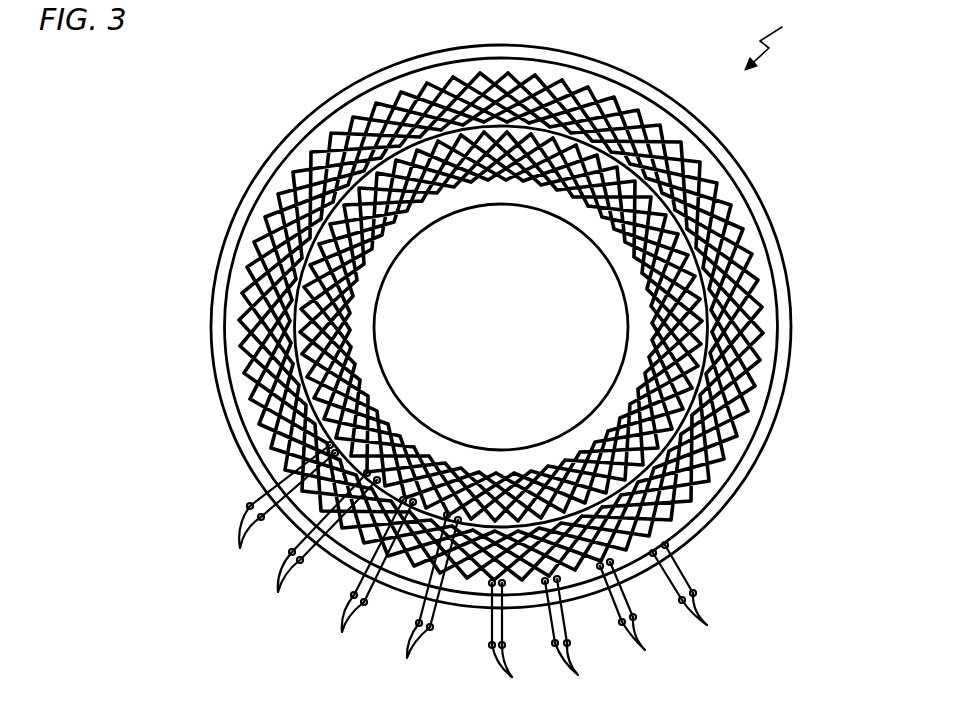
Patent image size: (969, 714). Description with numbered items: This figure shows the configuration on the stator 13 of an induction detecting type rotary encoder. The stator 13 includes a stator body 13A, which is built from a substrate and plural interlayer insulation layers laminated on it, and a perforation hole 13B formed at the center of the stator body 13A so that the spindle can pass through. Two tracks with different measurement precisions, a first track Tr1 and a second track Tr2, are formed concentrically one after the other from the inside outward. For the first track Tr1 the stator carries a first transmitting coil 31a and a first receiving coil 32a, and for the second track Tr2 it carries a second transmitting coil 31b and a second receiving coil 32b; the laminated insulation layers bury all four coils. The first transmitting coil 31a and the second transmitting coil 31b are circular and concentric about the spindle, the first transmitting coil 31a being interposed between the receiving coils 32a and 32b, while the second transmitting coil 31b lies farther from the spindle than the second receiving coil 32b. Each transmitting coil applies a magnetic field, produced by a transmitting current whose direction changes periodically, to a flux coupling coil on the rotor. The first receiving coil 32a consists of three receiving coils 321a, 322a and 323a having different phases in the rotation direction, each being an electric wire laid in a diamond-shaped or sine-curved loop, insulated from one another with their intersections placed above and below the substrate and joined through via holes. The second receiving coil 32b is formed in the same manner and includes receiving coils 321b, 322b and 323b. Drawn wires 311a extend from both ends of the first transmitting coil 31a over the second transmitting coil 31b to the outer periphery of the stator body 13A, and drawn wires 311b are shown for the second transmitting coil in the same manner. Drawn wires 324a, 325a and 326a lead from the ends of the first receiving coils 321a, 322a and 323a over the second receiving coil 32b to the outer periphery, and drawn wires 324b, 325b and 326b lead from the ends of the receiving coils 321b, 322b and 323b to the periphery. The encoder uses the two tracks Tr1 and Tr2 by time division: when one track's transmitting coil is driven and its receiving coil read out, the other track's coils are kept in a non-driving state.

The stator 13 is at (787, 24).
The stator body 13A is at (277, 153).
The perforation hole 13B is at (501, 205).
The first transmitting coil 31a is at (543, 126).
The second transmitting coil 31b is at (614, 84).
The first receiving coil 32a is at (382, 326).
The second receiving coil 32b is at (547, 326).
The receiving coil 321a is at (414, 326).
The receiving coil 322a is at (414, 326).
The receiving coil 323a is at (297, 300).
The receiving coil 321b is at (527, 326).
The receiving coil 322b is at (527, 326).
The receiving coil 323b is at (733, 428).
The drawn wires 311a is at (272, 510).
The neutral point lead of second coil 311b is at (695, 597).
The drawn wires 324a is at (422, 601).
The drawn wires 325a is at (366, 579).
The drawn wires 326a is at (316, 545).
The drawn wires 324b is at (638, 617).
The drawn wires 325b is at (578, 640).
The drawn wires 326b is at (511, 645).
The first track Tr1 is at (624, 252).
The second track Tr2 is at (750, 215).